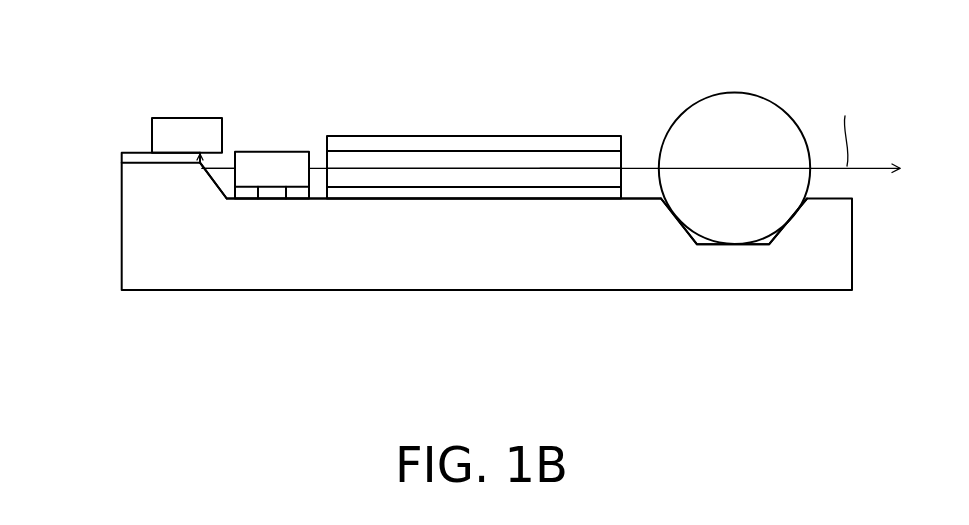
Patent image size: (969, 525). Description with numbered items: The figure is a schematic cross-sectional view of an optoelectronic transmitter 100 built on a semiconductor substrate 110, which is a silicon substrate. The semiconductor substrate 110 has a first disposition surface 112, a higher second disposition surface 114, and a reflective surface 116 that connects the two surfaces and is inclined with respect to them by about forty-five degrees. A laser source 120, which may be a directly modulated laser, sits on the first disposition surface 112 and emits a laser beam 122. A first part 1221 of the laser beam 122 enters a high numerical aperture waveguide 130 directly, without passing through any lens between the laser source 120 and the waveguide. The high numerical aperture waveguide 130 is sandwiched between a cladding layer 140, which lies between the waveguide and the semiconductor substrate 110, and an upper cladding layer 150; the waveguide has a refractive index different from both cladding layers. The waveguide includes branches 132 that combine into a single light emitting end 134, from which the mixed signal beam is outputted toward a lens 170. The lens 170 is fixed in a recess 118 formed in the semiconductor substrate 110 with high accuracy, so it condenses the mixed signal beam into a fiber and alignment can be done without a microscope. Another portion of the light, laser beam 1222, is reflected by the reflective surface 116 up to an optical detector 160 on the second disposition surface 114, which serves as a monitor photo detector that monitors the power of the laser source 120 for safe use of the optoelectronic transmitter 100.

The optoelectronic transmitter 100 is at (862, 395).
The semiconductor substrate 110 is at (288, 278).
The first disposition surface 112 is at (400, 197).
The second disposition surface 114 is at (141, 147).
The reflective surface 116 is at (226, 180).
The recess 118 is at (690, 214).
The laser source 120 is at (279, 151).
The laser beam 122 is at (425, 90).
The first part of the laser beam 1221 is at (572, 168).
The laser beam reflected by the reflective surface 1222 is at (227, 168).
The high numerical aperture waveguide 130 is at (535, 160).
The branch 132 is at (334, 181).
The light emitting end 134 is at (613, 180).
The cladding layer 140 is at (472, 192).
The cladding layer 150 is at (477, 147).
The optical detector 160 is at (180, 128).
The lens 170 is at (740, 110).